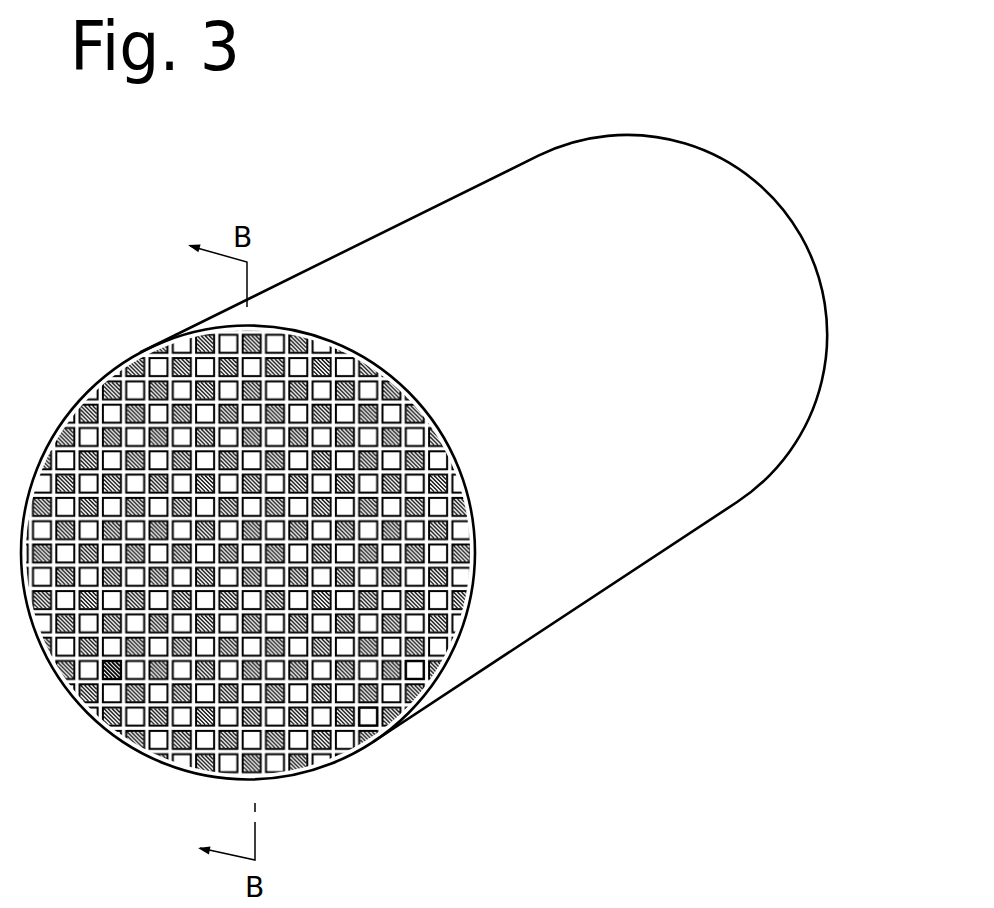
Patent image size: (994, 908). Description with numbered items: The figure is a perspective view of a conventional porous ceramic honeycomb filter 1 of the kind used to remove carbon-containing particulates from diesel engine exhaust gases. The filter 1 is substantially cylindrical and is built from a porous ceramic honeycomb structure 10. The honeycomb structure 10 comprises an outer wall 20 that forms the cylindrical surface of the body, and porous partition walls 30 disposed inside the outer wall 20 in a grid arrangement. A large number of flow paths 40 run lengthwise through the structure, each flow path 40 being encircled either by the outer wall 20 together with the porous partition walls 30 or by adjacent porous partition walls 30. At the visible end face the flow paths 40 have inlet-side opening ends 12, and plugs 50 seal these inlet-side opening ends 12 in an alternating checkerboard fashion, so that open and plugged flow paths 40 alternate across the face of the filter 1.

The porous ceramic honeycomb filter 1 is at (853, 123).
The porous ceramic honeycomb structure 10 is at (410, 210).
The inlet-side opening ends 12 is at (138, 718).
The outer wall 20 is at (580, 585).
The porous partition walls 30 is at (368, 715).
The flow paths 40 is at (413, 672).
The plugs 50 is at (102, 673).